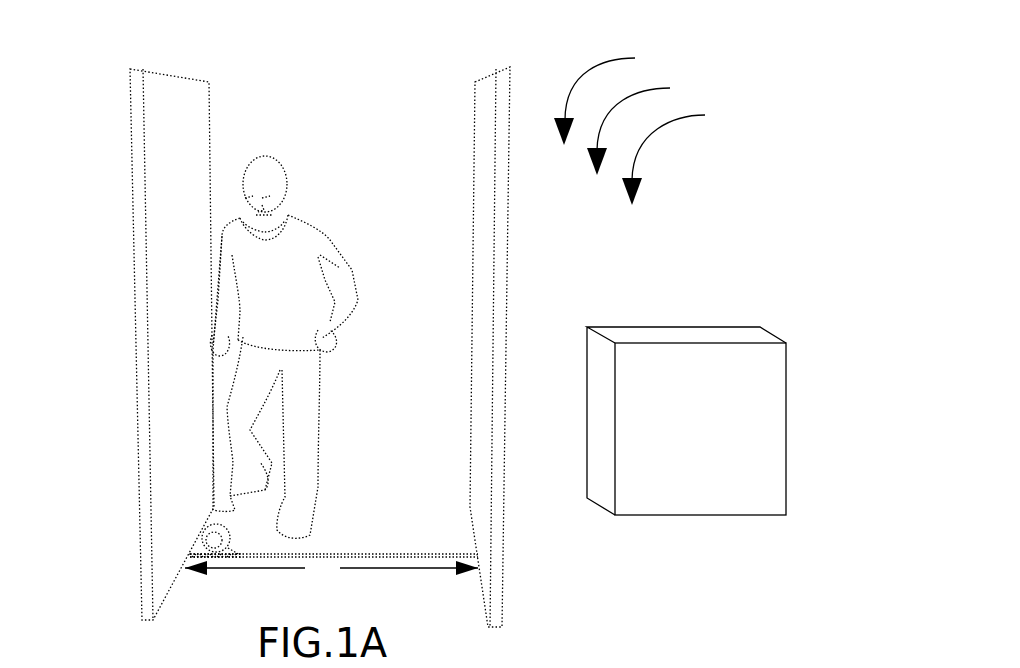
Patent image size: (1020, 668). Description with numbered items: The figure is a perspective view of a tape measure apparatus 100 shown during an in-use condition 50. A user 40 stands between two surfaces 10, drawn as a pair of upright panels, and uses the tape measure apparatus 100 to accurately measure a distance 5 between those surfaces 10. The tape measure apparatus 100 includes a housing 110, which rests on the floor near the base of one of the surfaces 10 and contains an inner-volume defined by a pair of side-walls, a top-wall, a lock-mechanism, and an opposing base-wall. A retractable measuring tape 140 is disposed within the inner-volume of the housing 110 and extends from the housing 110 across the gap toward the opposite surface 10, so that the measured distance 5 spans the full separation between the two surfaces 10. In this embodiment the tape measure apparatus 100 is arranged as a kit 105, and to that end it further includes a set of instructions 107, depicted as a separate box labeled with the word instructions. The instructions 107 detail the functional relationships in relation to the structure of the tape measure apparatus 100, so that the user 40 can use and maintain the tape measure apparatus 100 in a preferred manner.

The surfaces 10 is at (162, 323).
The user 40 is at (303, 228).
The housing 110 is at (182, 530).
The retractable measuring tape 140 is at (370, 553).
The distance 5 is at (331, 567).
The in-use condition 50 is at (611, 94).
The tape measure apparatus 100 is at (653, 124).
The kit 105 is at (688, 152).
The set of instructions 107 is at (786, 385).